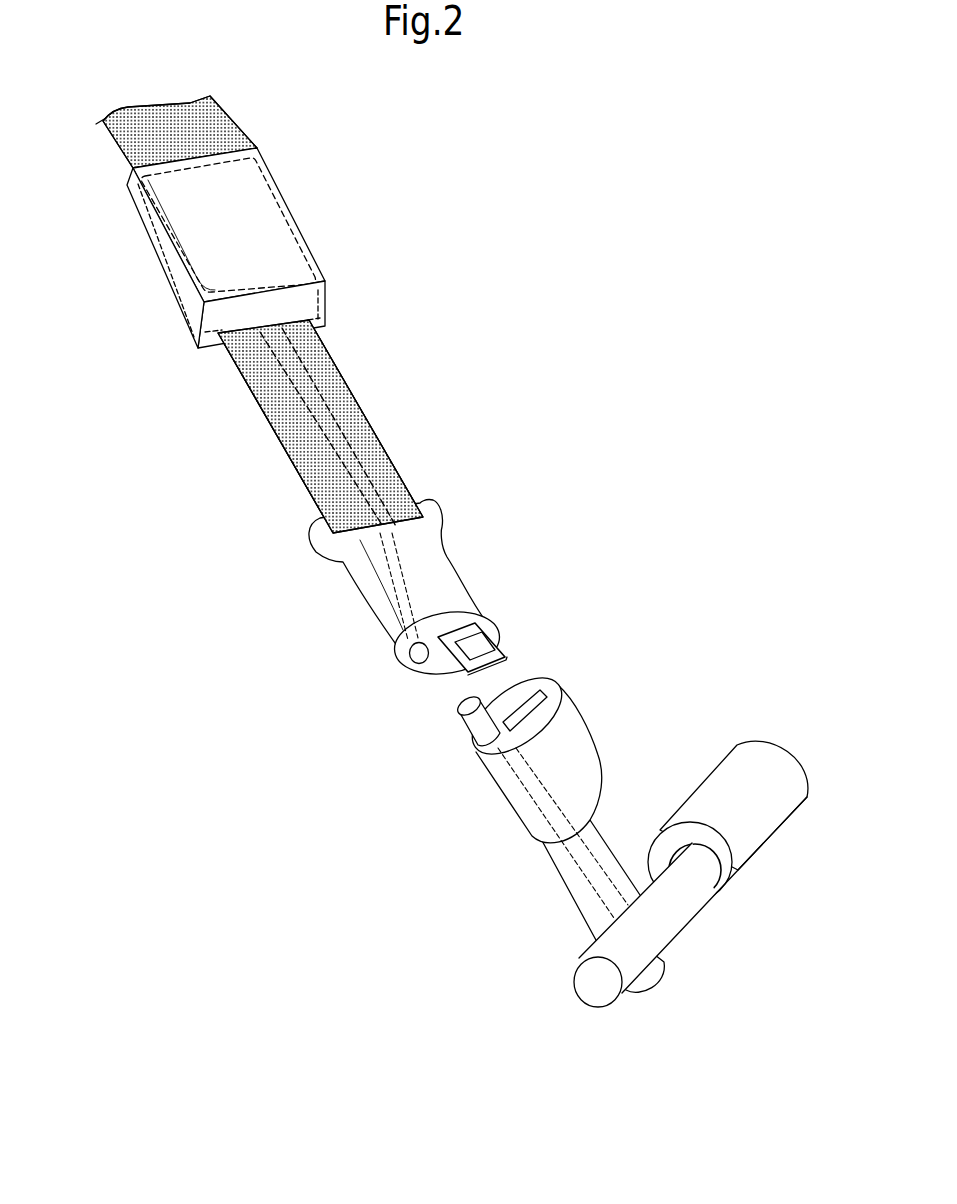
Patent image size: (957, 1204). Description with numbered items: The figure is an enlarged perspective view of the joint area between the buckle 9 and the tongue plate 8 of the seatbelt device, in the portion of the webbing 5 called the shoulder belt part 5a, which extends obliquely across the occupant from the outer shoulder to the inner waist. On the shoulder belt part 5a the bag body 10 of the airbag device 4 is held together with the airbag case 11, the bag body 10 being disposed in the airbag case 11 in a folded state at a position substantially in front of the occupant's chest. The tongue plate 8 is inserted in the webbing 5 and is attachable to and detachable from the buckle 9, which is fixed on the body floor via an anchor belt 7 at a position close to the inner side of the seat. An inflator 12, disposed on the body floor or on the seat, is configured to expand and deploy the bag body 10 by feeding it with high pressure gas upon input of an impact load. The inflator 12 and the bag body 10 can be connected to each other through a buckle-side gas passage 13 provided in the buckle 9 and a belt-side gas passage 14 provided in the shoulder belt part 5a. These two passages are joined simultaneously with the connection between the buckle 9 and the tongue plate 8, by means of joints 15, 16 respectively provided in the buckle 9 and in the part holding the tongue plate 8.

The airbag device 4 is at (285, 306).
The webbing 5 is at (299, 314).
The shoulder belt part 5a is at (312, 357).
The anchor belt 7 is at (602, 913).
The tongue plate 8 is at (455, 647).
The buckle 9 is at (534, 775).
The bag body 10 is at (263, 167).
The airbag case 11 is at (197, 337).
The inflator 12 is at (757, 817).
The buckle-side gas passage 13 is at (575, 870).
The belt-side gas passage 14 is at (343, 400).
The joint 15 is at (475, 745).
The joint 16 is at (422, 663).